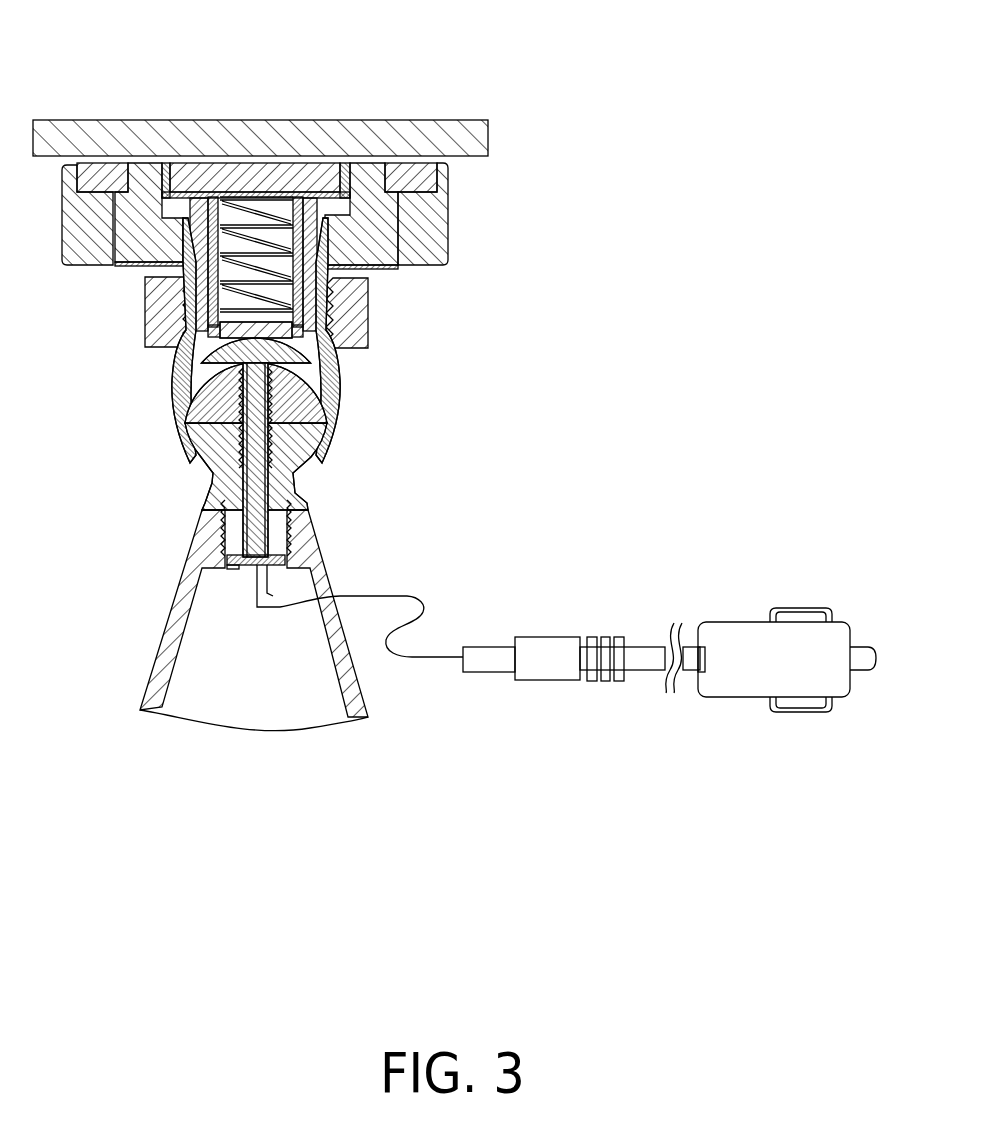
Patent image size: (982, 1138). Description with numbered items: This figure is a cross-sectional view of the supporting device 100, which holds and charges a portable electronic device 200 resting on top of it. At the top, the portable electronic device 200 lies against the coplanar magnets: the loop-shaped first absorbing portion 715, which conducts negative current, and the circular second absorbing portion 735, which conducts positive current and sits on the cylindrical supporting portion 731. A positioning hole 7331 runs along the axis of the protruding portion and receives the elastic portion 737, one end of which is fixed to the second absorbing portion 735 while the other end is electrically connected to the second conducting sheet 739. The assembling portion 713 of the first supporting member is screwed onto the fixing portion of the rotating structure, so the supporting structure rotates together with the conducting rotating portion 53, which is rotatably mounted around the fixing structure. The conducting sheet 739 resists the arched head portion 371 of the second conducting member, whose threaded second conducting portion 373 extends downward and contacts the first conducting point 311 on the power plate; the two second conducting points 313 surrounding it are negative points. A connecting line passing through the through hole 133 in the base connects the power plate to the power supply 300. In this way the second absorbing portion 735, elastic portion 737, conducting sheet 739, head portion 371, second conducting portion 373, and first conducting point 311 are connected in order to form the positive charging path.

The portable electronic device 200 is at (454, 125).
The first absorbing portion 715 is at (437, 180).
The second absorbing portion 735 is at (313, 177).
The supporting portion 731 is at (166, 167).
The positioning hole 7331 is at (231, 208).
The second conducting sheet 739 is at (195, 331).
The elastic portion 737 is at (183, 288).
The assembling portion 713 is at (352, 326).
The head portion 371 is at (190, 357).
The rotating portion 53 is at (345, 397).
The second conducting portion 373 is at (250, 466).
The first conducting point 311 is at (300, 531).
The second conducting point 313 is at (232, 556).
The through hole 133 is at (273, 596).
The power supply 300 is at (747, 647).
The supporting device 100 is at (292, 389).